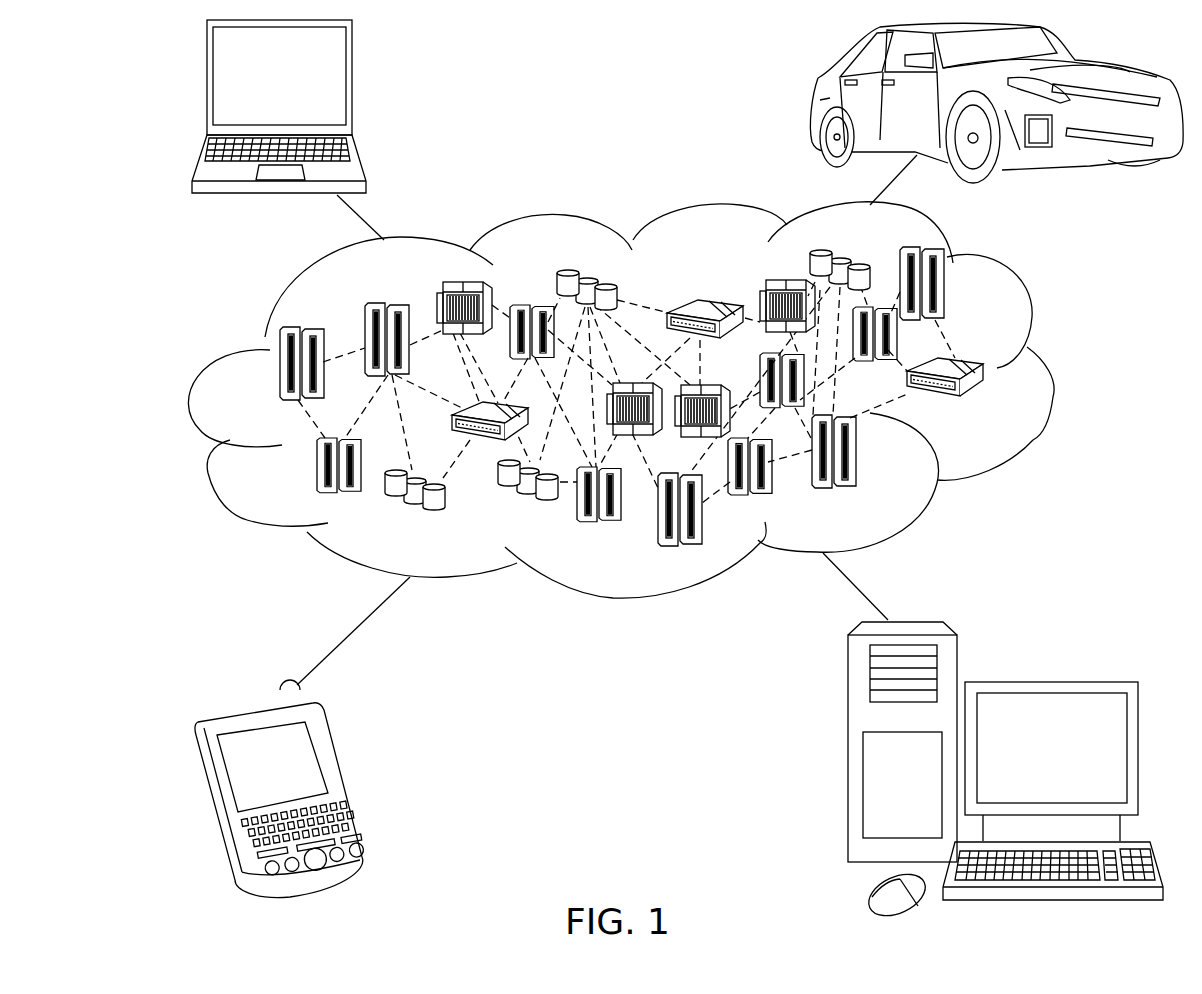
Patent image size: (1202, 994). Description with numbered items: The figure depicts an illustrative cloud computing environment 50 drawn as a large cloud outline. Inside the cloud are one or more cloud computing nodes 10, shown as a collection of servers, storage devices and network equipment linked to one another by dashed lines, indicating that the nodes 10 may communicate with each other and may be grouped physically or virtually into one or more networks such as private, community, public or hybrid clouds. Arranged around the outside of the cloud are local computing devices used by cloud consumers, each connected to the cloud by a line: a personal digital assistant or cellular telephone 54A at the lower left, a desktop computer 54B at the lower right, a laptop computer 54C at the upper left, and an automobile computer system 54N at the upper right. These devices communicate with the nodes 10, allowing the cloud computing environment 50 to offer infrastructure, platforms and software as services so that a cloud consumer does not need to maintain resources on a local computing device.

The cloud computing node 10 is at (990, 408).
The cloud computing environment 50 is at (1048, 375).
The personal digital assistant (PDA) or cellular telephone 54A is at (340, 778).
The desktop computer 54B is at (1049, 682).
The laptop computer 54C is at (352, 83).
The automobile computer system 54N is at (818, 100).